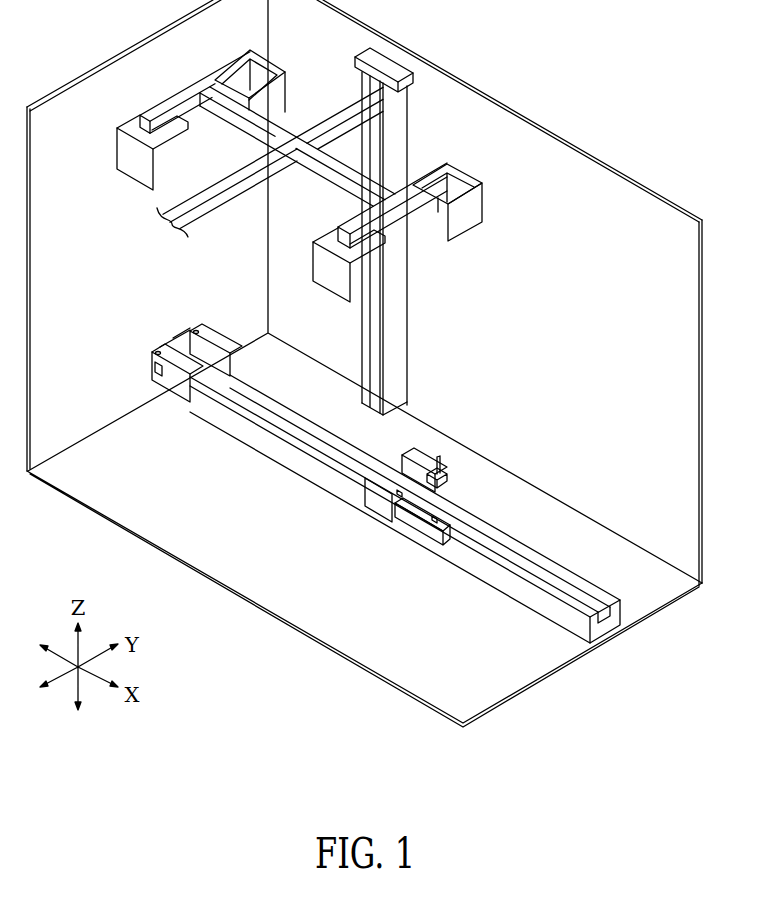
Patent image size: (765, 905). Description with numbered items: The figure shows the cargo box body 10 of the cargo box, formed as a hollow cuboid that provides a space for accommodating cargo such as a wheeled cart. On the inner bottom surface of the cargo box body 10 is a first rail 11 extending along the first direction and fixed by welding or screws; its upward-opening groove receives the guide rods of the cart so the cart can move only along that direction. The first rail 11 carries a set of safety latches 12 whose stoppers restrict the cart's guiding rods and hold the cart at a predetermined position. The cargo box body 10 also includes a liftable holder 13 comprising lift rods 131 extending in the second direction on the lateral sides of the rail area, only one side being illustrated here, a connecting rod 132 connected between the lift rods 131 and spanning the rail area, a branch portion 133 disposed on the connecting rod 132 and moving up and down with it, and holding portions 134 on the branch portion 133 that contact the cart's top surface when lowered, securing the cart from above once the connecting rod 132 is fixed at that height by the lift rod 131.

The cargo box body 10 is at (575, 132).
The first rail 11 is at (523, 593).
The safety latches 12 is at (382, 498).
The liftable holder 13 is at (339, 231).
The lift rod 131 is at (400, 345).
The connecting rod 132 is at (205, 197).
The branch portion 133 is at (393, 193).
The holding portion 134 is at (470, 210).